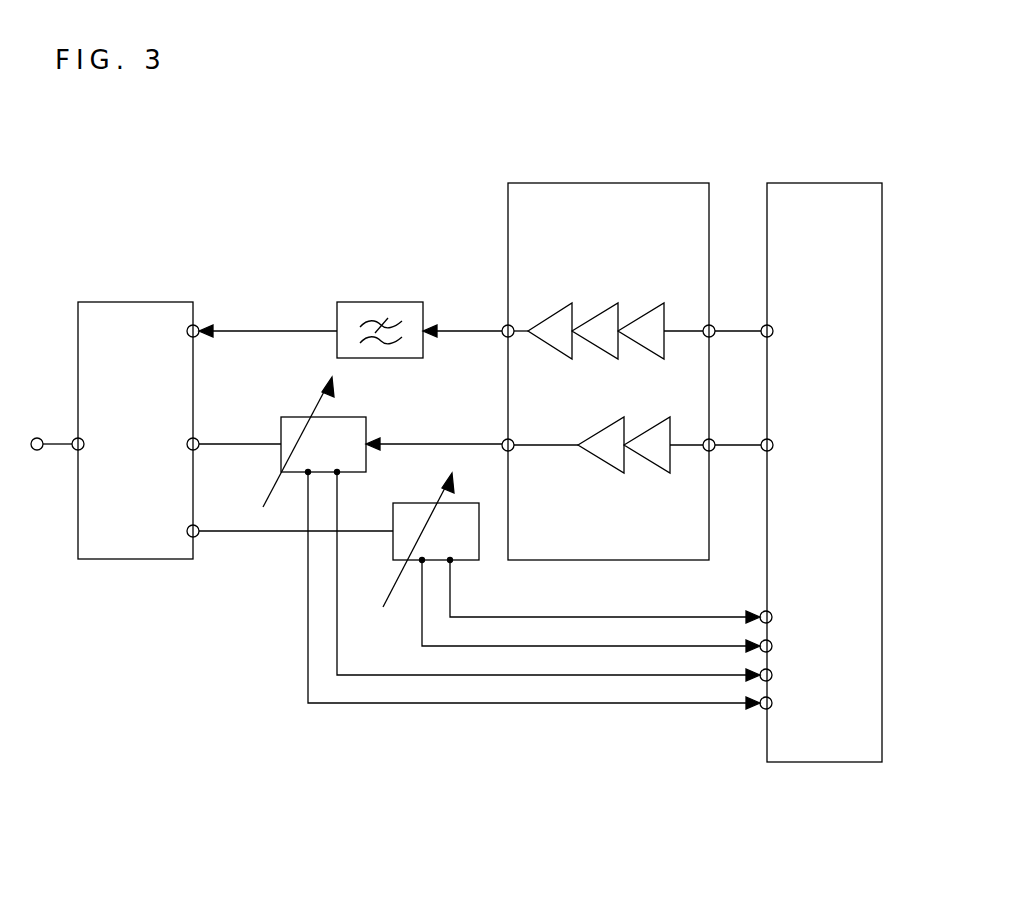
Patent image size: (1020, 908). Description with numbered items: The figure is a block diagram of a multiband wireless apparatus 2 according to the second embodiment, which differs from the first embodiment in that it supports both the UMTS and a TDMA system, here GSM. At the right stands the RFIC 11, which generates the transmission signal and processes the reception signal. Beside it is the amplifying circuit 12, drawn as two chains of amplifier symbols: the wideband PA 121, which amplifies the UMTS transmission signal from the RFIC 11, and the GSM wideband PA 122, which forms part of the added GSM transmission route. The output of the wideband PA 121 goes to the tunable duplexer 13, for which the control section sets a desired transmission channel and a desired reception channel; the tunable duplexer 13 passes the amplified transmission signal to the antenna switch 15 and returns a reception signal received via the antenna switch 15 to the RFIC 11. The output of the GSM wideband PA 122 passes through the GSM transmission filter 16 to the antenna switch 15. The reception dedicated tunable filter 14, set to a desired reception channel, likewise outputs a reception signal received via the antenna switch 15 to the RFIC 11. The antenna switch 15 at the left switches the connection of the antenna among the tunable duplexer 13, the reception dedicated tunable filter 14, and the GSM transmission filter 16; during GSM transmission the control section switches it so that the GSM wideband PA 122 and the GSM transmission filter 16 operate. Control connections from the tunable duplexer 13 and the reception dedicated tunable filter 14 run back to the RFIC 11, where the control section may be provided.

The multiband wireless apparatus 2 is at (858, 154).
The RFIC 11 is at (815, 762).
The amplifying circuit 12 is at (618, 182).
The tunable duplexer 13 is at (357, 410).
The reception dedicated tunable filter 14 is at (462, 503).
The antenna switch 15 is at (153, 559).
The GSM transmission filter 16 is at (392, 299).
The wideband PA 121 is at (600, 427).
The GSM wideband PA 122 is at (593, 312).